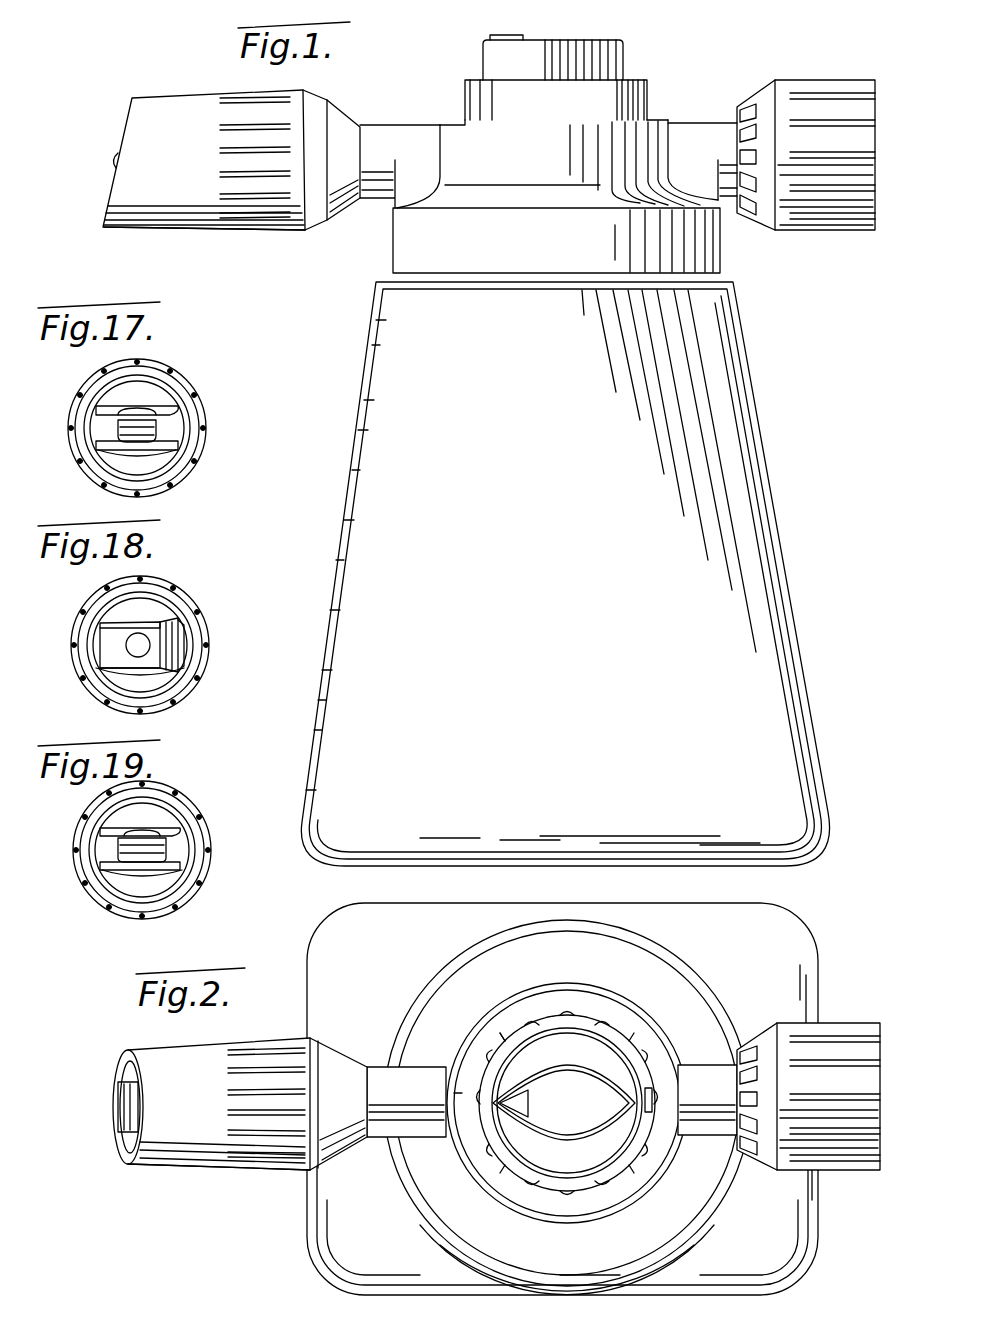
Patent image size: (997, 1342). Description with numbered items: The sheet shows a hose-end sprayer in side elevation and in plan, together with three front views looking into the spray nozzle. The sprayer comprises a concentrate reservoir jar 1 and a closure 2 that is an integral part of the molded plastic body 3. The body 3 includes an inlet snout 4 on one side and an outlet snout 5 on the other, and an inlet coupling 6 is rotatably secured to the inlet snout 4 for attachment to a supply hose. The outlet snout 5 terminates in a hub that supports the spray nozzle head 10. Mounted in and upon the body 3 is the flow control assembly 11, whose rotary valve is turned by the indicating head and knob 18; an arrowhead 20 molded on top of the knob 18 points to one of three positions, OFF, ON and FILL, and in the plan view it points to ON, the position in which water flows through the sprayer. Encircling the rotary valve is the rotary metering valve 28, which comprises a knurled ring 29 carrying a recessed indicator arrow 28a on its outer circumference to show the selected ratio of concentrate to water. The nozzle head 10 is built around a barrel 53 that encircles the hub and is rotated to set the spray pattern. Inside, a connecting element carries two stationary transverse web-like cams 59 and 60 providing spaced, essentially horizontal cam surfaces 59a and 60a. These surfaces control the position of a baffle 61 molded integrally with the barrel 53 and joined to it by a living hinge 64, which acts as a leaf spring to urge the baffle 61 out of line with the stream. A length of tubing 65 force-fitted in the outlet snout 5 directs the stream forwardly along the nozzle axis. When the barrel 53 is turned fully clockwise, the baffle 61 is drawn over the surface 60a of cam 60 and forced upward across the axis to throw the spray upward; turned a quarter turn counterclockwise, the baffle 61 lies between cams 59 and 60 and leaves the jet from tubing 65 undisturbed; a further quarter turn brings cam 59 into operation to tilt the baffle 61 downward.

In FIG. 1, the concentrate reservoir jar 1 is at (714, 470).
In FIG. 2, the concentrate reservoir jar 1 is at (292, 1244).
In FIG. 1, the closure 2 is at (710, 244).
In FIG. 2, the closure 2 is at (425, 1205).
In FIG. 1, the body 3 is at (370, 244).
In FIG. 2, the body 3 is at (450, 978).
In FIG. 1, the inlet snout 4 is at (697, 118).
In FIG. 2, the inlet snout 4 is at (710, 1072).
In FIG. 1, the outlet snout 5 is at (389, 124).
In FIG. 2, the outlet snout 5 is at (390, 1075).
In FIG. 1, the inlet coupling 6 is at (790, 82).
In FIG. 2, the inlet coupling 6 is at (838, 1024).
In FIG. 1, the spray nozzle head 10 is at (179, 80).
In FIG. 2, the spray nozzle head 10 is at (168, 1186).
In FIG. 1, the flow control assembly 11 is at (676, 58).
In FIG. 2, the flow control assembly 11 is at (666, 1004).
In FIG. 1, the indicating head and knob 18 is at (548, 48).
In FIG. 2, the indicating head and knob 18 is at (580, 1052).
In FIG. 1, the arrowhead 20 is at (500, 34).
In FIG. 2, the arrowhead 20 is at (512, 1098).
In FIG. 1, the rotary metering valve 28 is at (628, 75).
In FIG. 2, the rotary metering valve 28 is at (626, 1018).
In FIG. 2, the recessed indicator arrow 28a is at (654, 1090).
In FIG. 2, the knurled ring 29 is at (498, 1030).
In FIG. 1, the barrel 53 is at (205, 228).
In FIG. 17, the barrel 53 is at (196, 390).
In FIG. 18, the barrel 53 is at (200, 605).
In FIG. 19, the barrel 53 is at (165, 786).
In FIG. 2, the barrel 53 is at (212, 1162).
In FIG. 17, the cam 59 is at (148, 384).
In FIG. 18, the cam 59 is at (152, 610).
In FIG. 19, the cam 59 is at (152, 818).
In FIG. 17, the cam surface 59a is at (100, 420).
In FIG. 18, the cam surface 59a is at (104, 638).
In FIG. 19, the cam surface 59a is at (104, 846).
In FIG. 17, the cam 60 is at (146, 462).
In FIG. 18, the cam 60 is at (150, 678).
In FIG. 19, the cam 60 is at (126, 888).
In FIG. 17, the cam surface 60a is at (108, 446).
In FIG. 18, the cam surface 60a is at (110, 666).
In FIG. 19, the cam surface 60a is at (108, 868).
In FIG. 1, the baffle 61 is at (114, 160).
In FIG. 17, the baffle 61 is at (160, 428).
In FIG. 18, the baffle 61 is at (164, 630).
In FIG. 19, the baffle 61 is at (168, 850).
In FIG. 2, the baffle 61 is at (112, 1092).
In FIG. 18, the living hinge 64 is at (182, 650).
In FIG. 17, the tubing 65 is at (156, 404).
In FIG. 18, the tubing 65 is at (124, 650).
In FIG. 19, the tubing 65 is at (156, 866).